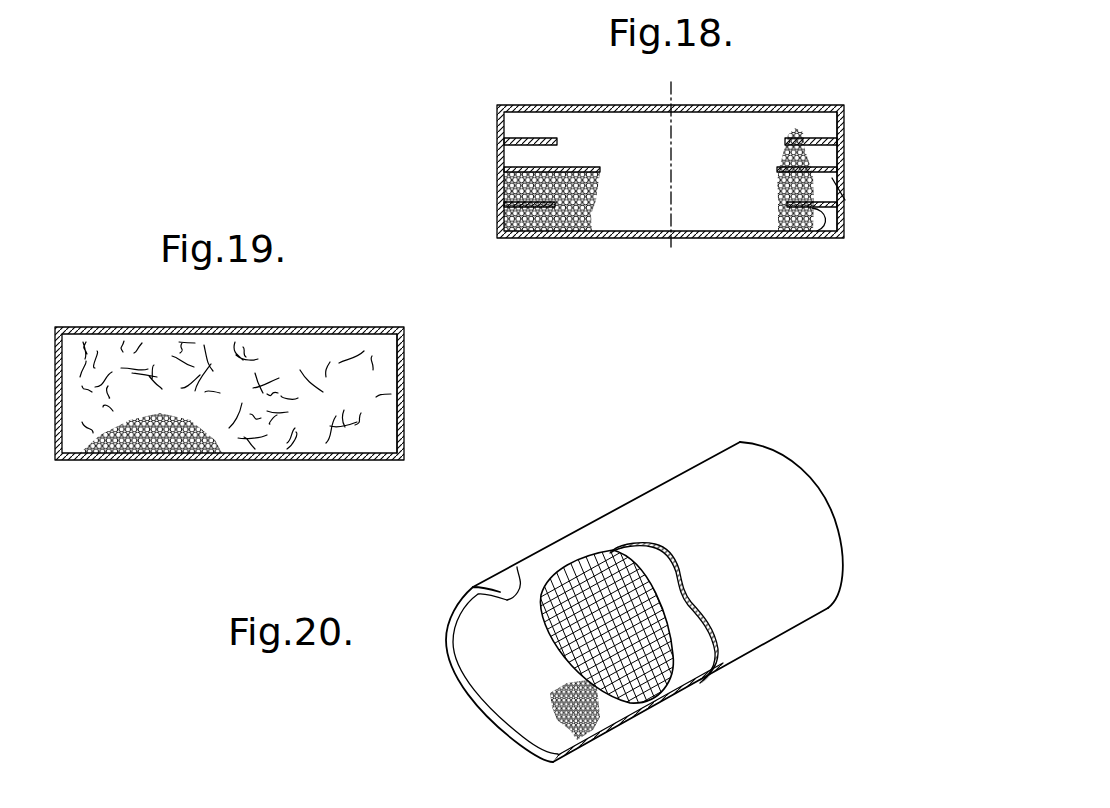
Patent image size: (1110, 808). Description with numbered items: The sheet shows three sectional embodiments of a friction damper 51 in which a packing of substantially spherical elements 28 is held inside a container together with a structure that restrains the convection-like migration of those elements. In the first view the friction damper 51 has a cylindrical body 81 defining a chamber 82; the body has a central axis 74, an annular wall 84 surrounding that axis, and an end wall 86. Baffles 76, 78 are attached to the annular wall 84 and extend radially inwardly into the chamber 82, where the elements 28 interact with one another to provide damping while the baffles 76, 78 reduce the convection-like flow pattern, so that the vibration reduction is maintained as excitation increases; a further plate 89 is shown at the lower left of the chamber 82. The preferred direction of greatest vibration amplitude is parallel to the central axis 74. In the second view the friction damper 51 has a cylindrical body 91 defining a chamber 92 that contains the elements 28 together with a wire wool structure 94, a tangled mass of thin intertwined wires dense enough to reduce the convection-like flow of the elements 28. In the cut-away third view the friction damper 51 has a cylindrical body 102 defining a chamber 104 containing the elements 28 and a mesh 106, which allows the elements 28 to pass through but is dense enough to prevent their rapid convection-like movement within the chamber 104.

In FIG. 18, the friction damper 51 is at (494, 93).
In FIG. 19, the friction damper 51 is at (111, 307).
In FIG. 20, the friction damper 51 is at (428, 631).
In FIG. 18, the cylindrical body 81 is at (576, 96).
In FIG. 18, the chamber 82 is at (725, 118).
In FIG. 18, the end wall 86 is at (783, 106).
In FIG. 18, the annular wall 84 is at (845, 120).
In FIG. 18, the lower partition plate 89 is at (572, 240).
In FIG. 18, the substantially spherical elements 28 is at (592, 200).
In FIG. 19, the substantially spherical elements 28 is at (156, 450).
In FIG. 20, the substantially spherical elements 28 is at (568, 730).
In FIG. 18, the central axis 74 is at (671, 250).
In FIG. 18, the baffle 76 is at (807, 240).
In FIG. 18, the baffle 78 is at (832, 178).
In FIG. 19, the chamber 92 is at (325, 343).
In FIG. 19, the cylindrical body 91 is at (400, 357).
In FIG. 19, the wire wool structure 94 is at (380, 430).
In FIG. 20, the cylindrical body 102 is at (472, 590).
In FIG. 20, the chamber 104 is at (687, 593).
In FIG. 20, the mesh 106 is at (657, 704).